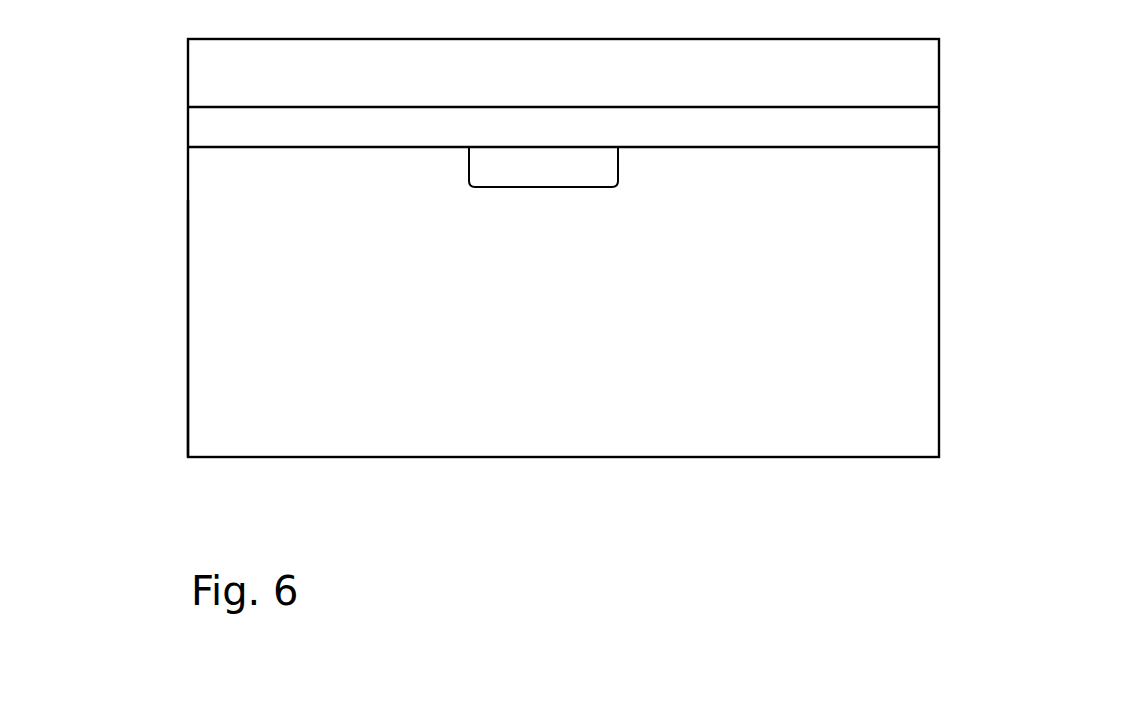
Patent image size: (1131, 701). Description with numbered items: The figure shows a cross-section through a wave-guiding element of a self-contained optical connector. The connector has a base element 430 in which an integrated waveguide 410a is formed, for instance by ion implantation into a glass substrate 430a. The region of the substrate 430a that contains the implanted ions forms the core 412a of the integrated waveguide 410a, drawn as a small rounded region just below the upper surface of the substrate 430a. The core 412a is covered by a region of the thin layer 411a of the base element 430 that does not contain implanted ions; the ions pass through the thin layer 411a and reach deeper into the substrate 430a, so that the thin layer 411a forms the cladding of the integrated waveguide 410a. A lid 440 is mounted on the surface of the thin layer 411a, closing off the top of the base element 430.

The integrated waveguide 410a is at (523, 242).
The thin layer 411a is at (926, 120).
The core 412a is at (563, 173).
The base element 430 is at (939, 283).
The glass substrate 430a is at (885, 362).
The lid 440 is at (912, 80).